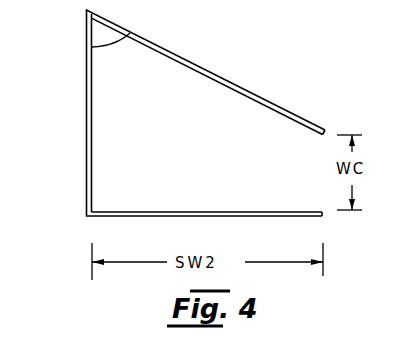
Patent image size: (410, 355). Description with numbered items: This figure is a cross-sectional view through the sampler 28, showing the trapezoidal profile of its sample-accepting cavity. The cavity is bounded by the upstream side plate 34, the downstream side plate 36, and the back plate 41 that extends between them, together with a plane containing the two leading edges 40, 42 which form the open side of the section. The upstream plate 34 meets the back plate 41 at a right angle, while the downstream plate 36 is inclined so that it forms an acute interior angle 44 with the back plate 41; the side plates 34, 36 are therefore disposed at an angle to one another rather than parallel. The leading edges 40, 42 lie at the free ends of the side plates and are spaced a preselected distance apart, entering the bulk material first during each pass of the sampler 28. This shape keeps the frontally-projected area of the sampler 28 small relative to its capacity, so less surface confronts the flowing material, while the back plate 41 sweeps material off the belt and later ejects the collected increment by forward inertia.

The sampler 28 is at (246, 83).
The upstream side plate 34 is at (235, 217).
The downstream side plate 36 is at (195, 59).
The leading edge 40 is at (323, 215).
The back plate 41 is at (86, 90).
The leading edge 42 is at (333, 128).
The acute interior angle 44 is at (138, 41).